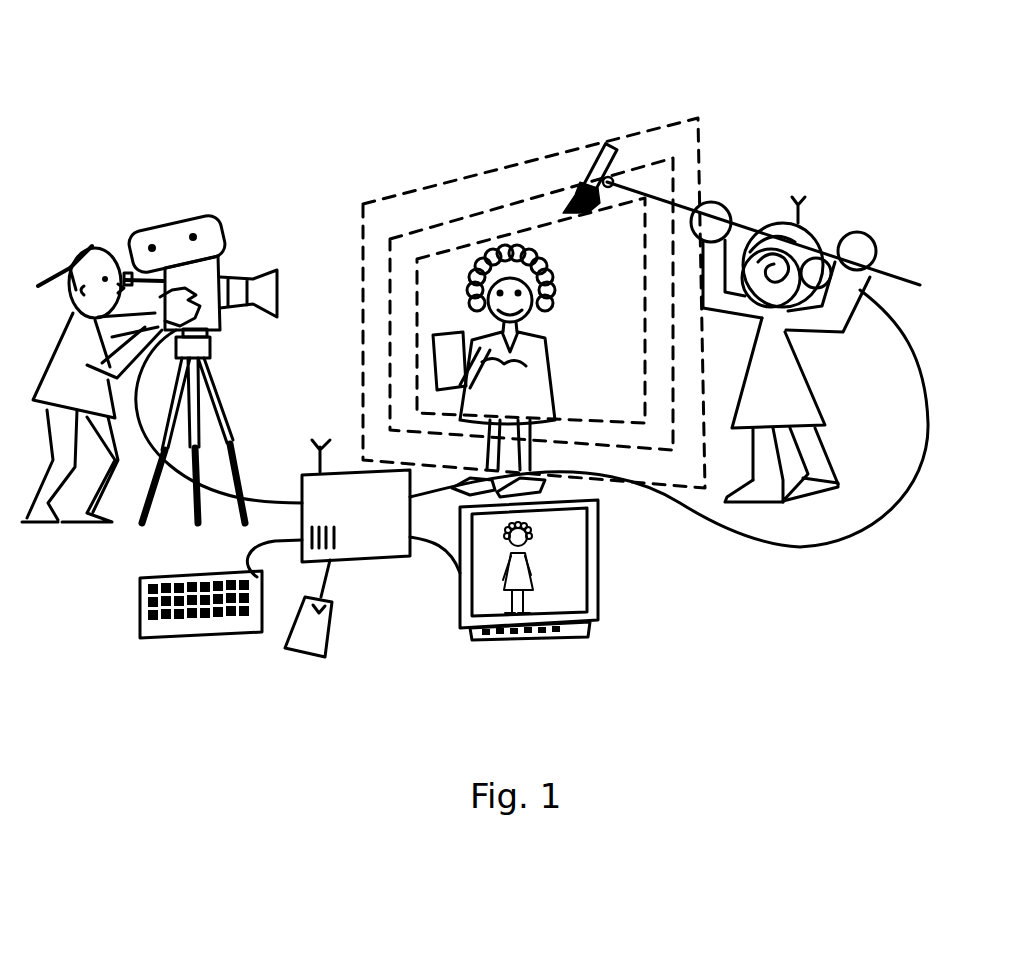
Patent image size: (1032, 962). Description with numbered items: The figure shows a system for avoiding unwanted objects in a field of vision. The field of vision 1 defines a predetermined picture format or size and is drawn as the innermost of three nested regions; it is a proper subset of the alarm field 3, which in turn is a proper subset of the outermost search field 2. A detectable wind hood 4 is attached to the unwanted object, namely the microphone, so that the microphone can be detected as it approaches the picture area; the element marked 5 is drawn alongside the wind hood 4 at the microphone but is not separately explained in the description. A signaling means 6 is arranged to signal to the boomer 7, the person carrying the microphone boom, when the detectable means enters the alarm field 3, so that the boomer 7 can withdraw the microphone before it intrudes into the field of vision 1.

The field of vision 1 is at (448, 247).
The search field 2 is at (662, 123).
The alarm field 3 is at (500, 205).
The detectable wind hood 4 is at (568, 203).
The light pointer 5 is at (614, 147).
The signaling means 6 is at (777, 227).
The boomer 7 is at (785, 314).